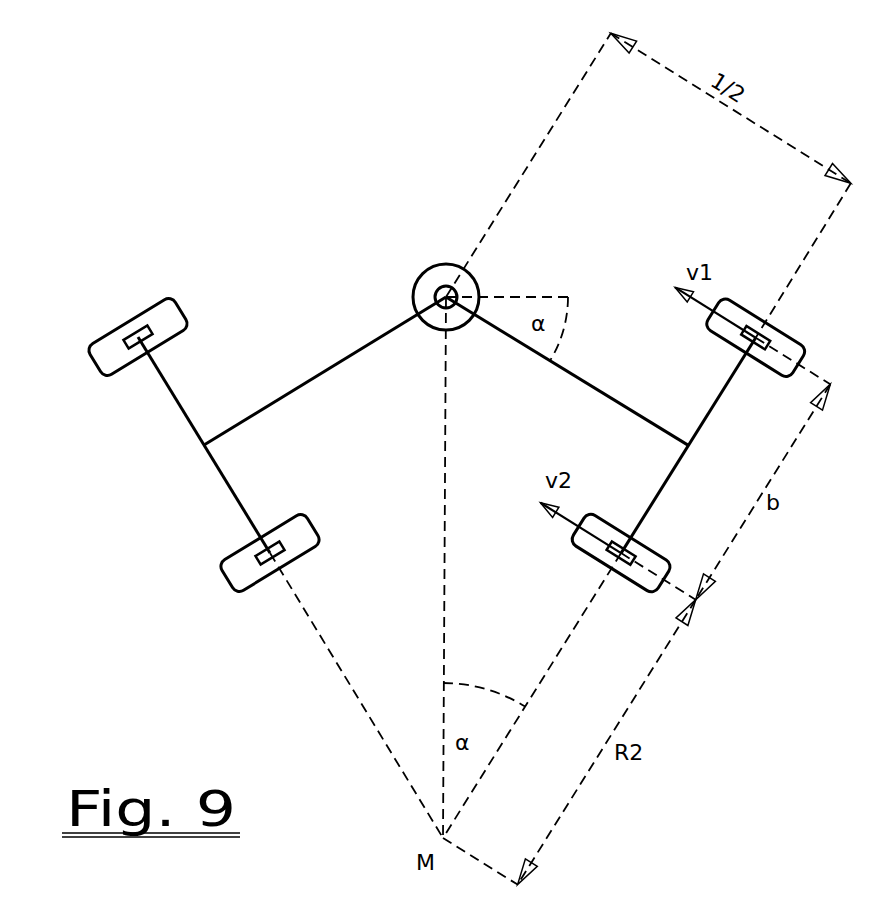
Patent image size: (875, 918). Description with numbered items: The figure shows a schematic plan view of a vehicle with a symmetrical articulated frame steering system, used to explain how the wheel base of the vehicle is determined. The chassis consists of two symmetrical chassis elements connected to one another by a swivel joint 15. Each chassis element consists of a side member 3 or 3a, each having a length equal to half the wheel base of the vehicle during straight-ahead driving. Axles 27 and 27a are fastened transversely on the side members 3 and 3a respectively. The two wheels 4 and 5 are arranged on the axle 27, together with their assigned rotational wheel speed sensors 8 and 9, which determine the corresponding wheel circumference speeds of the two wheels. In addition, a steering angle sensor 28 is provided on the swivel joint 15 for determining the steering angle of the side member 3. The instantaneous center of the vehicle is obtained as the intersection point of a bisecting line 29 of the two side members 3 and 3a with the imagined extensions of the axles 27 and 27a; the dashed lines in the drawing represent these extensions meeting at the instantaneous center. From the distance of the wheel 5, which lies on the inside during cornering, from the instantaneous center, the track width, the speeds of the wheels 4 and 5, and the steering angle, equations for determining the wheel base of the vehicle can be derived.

The side member 3 is at (600, 390).
The side member 3a is at (335, 365).
The wheel 4 is at (776, 304).
The wheel 5 is at (629, 527).
The rotational wheel speed sensor 8 is at (756, 289).
The rotational wheel speed sensor 9 is at (616, 514).
The swivel joint 15 is at (447, 288).
The axle 27 is at (716, 410).
The axle 27a is at (222, 478).
The steering angle sensor 28 is at (413, 297).
The bisecting line 29 is at (444, 540).